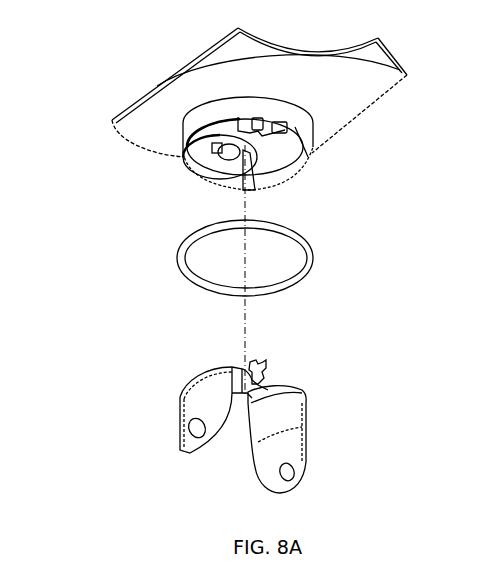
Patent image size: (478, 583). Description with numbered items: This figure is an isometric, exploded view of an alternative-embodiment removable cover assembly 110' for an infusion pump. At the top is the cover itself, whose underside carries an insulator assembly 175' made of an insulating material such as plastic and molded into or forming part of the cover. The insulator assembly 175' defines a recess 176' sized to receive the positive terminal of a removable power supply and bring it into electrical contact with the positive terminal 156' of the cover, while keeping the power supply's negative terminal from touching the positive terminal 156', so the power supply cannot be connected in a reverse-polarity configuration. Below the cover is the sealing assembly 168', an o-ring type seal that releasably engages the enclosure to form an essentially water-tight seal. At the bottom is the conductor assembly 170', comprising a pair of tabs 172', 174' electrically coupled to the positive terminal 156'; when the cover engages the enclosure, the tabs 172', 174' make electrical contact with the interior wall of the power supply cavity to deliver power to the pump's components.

The removable cover assembly 110' is at (220, 109).
The insulator assembly 175' is at (211, 176).
The recess 176' is at (207, 182).
The positive terminal 156' is at (291, 273).
The sealing assembly 168' is at (274, 280).
The conductor assembly 170' is at (233, 405).
The tab 172' is at (167, 410).
The tab 174' is at (314, 440).